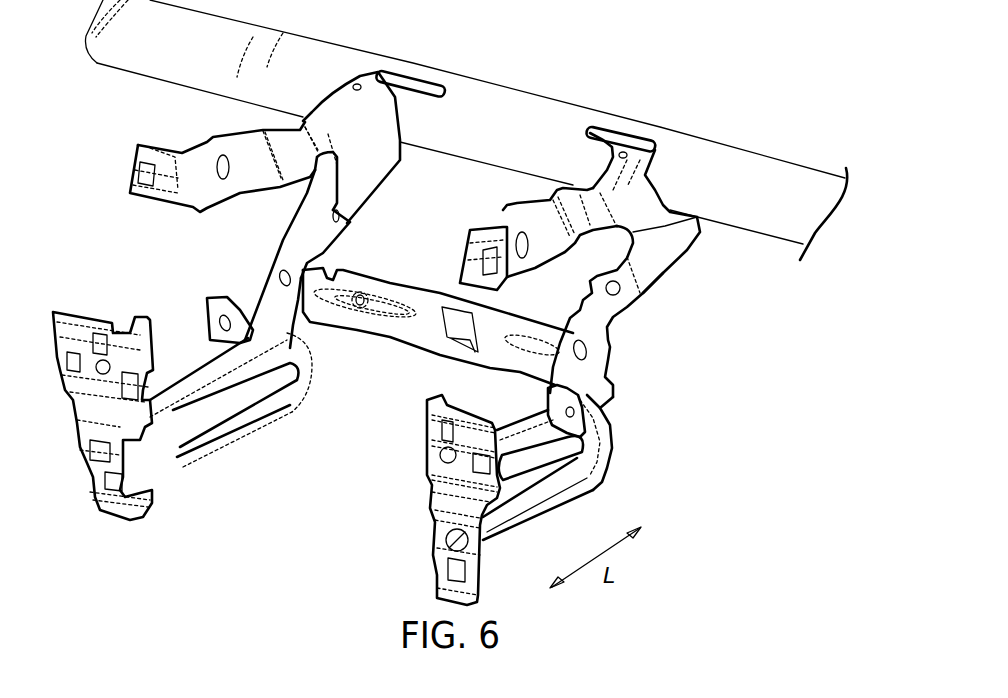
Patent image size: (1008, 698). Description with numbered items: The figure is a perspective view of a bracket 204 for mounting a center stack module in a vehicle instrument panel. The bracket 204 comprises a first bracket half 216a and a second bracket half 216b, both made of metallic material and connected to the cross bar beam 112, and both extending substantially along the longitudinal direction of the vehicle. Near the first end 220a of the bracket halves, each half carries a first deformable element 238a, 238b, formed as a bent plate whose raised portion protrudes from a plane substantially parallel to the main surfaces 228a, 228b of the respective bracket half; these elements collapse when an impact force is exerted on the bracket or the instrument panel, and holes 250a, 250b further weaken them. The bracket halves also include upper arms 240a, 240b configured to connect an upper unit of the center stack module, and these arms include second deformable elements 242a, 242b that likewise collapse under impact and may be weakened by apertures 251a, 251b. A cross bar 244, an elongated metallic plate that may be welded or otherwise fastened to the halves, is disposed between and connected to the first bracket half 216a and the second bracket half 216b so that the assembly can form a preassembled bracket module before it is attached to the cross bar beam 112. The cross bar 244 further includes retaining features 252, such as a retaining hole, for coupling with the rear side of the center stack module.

The cross bar beam 112 is at (770, 168).
The bracket 204 is at (719, 77).
The first bracket half 216a is at (664, 273).
The second bracket half 216b is at (280, 253).
The first end 220a is at (343, 120).
The main surface 228a is at (588, 491).
The main surface 228b is at (193, 381).
The first deformable element 238a is at (632, 295).
The first deformable element 238b is at (345, 230).
The upper arm 240a is at (530, 203).
The upper arm 240b is at (238, 131).
The second deformable element 242a is at (573, 200).
The second deformable element 242b is at (310, 180).
The cross bar 244 is at (443, 358).
The hole 250a is at (606, 289).
The hole 250b is at (341, 214).
The aperture 251a is at (517, 233).
The aperture 251b is at (217, 177).
The retaining feature 252 is at (358, 305).